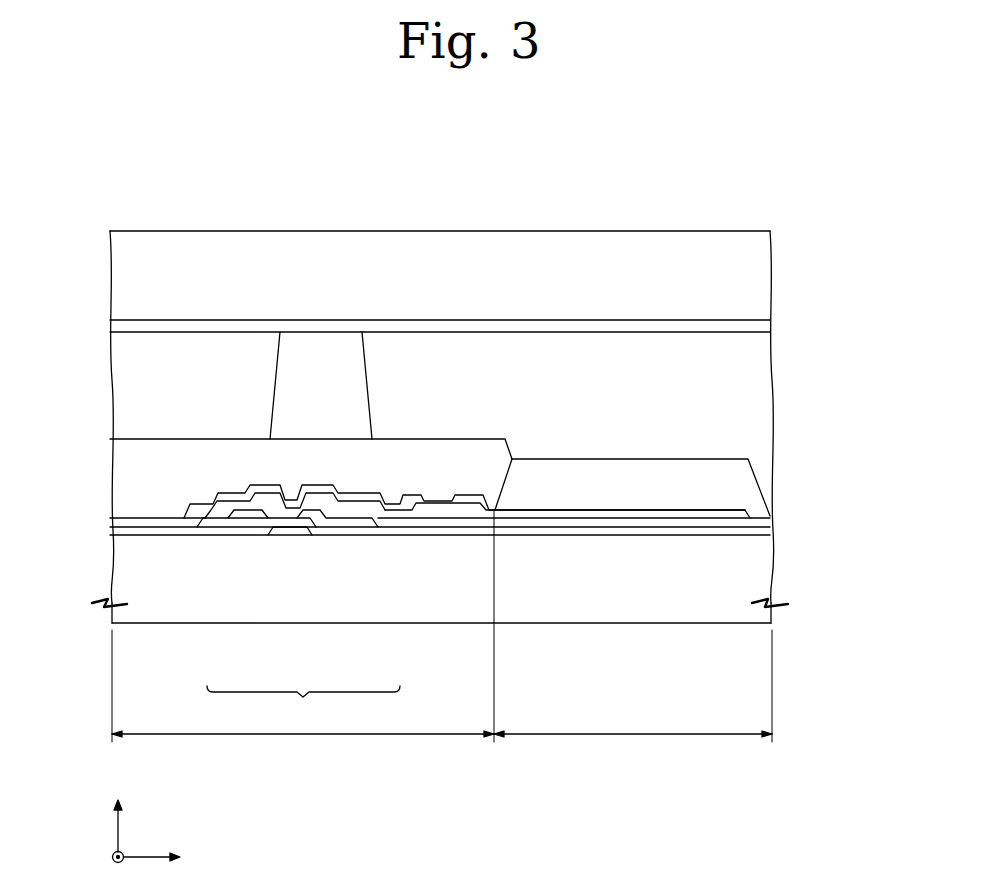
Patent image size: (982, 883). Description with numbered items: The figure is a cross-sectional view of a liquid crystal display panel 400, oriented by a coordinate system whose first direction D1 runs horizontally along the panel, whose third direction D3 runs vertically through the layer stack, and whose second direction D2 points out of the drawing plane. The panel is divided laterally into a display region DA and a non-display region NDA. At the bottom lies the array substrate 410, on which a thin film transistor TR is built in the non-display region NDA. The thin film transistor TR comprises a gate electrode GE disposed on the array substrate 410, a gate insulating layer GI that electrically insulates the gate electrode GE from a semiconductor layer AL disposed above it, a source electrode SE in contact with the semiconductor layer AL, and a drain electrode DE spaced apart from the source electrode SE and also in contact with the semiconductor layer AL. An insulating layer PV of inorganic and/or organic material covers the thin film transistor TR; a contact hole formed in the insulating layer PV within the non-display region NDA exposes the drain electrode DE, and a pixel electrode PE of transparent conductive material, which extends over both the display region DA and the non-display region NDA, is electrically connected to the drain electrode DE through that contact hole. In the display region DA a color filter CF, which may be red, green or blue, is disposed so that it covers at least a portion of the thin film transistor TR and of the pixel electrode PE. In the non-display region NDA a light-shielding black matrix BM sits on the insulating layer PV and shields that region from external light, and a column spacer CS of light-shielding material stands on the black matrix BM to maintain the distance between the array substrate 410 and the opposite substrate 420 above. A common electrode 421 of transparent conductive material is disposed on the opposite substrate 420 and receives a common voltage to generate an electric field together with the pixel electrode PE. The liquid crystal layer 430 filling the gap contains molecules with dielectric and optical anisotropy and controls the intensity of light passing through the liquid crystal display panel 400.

The liquid crystal display panel 400 is at (650, 173).
The opposite substrate 420 is at (758, 281).
The common electrode 421 is at (760, 328).
The liquid crystal layer 430 is at (758, 389).
The array substrate 410 is at (757, 568).
The column spacer CS is at (353, 392).
The color filter CF is at (747, 483).
The black matrix BM is at (118, 470).
The insulating layer PV is at (757, 518).
The pixel electrode PE is at (433, 508).
The source electrode SE is at (207, 508).
The semiconductor layer AL is at (243, 508).
The gate electrode GE is at (288, 525).
The drain electrode DE is at (337, 508).
The gate insulating layer GI is at (380, 508).
The thin film transistor TR is at (303, 704).
The non-display region NDA is at (303, 636).
The display region DA is at (633, 696).
The first direction D1 is at (165, 860).
The second direction D2 is at (105, 860).
The third direction D3 is at (118, 813).